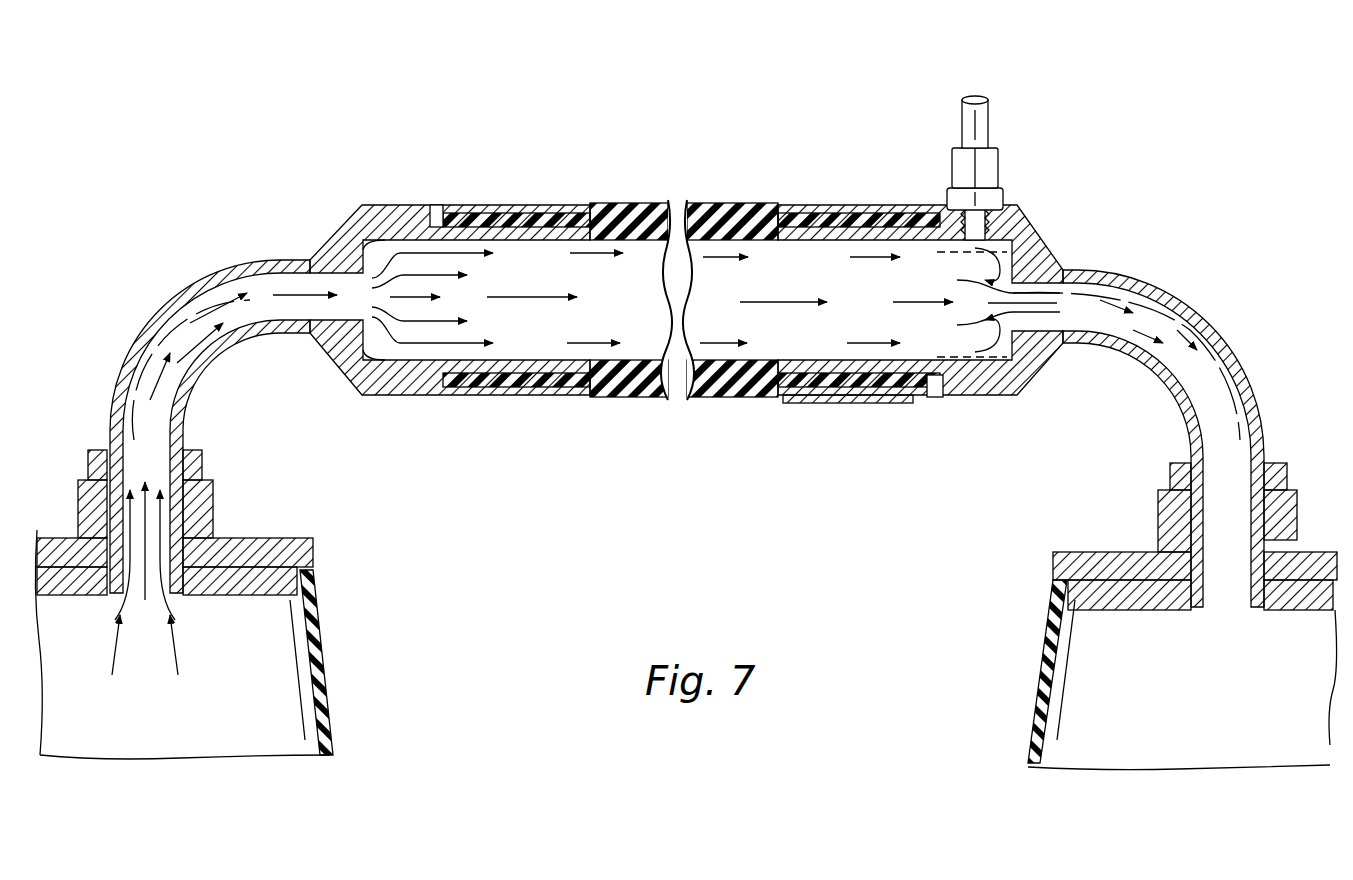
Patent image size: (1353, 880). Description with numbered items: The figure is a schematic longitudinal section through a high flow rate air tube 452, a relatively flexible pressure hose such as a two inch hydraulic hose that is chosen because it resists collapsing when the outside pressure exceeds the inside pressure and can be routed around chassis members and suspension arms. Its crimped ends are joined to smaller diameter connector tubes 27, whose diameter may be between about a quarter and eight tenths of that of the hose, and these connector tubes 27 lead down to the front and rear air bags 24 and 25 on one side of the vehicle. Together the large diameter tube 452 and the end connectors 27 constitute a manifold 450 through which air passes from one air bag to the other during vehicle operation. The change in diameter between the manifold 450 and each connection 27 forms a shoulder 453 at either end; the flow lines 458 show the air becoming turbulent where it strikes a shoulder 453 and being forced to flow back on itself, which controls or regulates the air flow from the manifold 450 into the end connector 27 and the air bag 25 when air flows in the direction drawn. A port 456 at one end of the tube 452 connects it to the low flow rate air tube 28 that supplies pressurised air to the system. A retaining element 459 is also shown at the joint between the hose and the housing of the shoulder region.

The manifold 450 is at (711, 288).
The shoulder 453 is at (393, 238).
The high flow rate air tube 452 is at (623, 202).
The retaining clip 459 is at (967, 400).
The port 456 is at (1017, 223).
The low flow rate air tube 28 is at (990, 122).
The flow lines 458 is at (415, 297).
The connector tube 27 is at (200, 280).
The front air bag 24 is at (160, 708).
The rear air bag 25 is at (1227, 713).